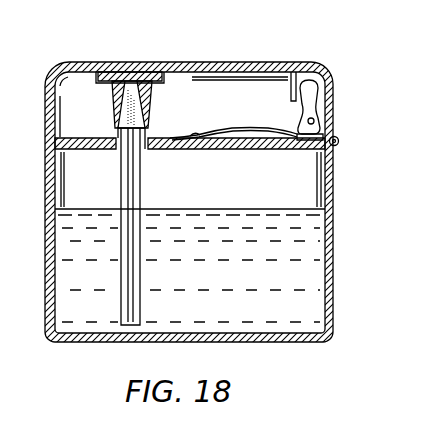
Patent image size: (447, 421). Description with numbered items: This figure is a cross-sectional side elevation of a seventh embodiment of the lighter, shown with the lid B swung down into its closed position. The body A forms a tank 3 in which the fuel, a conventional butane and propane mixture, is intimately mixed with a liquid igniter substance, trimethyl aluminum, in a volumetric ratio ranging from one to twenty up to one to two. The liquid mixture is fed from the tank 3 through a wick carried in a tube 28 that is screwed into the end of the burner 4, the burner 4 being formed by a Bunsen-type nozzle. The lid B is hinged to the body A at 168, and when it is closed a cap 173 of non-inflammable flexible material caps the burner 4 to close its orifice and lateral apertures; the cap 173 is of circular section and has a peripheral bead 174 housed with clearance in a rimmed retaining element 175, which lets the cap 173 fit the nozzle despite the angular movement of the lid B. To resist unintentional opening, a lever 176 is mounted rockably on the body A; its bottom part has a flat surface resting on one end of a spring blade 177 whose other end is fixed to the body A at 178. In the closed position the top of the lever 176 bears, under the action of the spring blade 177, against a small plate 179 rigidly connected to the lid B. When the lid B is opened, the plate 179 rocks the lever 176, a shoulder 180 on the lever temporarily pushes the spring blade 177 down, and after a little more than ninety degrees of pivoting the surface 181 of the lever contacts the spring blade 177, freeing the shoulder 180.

The tank 3 is at (60, 172).
The burner 4 is at (145, 152).
The tube 28 is at (127, 189).
The hinge 168 is at (339, 142).
The cap 173 is at (112, 103).
The peripheral bead 174 is at (109, 64).
The rimmed retaining element 175 is at (174, 64).
The lever 176 is at (314, 87).
The spring blade 177 is at (242, 128).
The fixing point of spring blade 178 is at (192, 133).
The small plate 179 is at (290, 88).
The shoulder 180 is at (334, 122).
The surface of lever 181 is at (334, 108).
The body A is at (337, 343).
The lid B is at (220, 63).